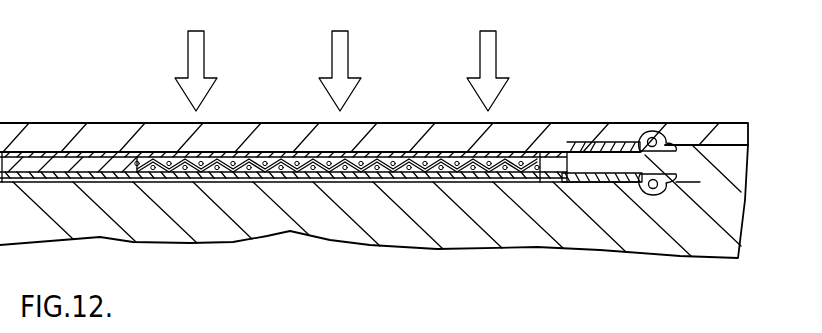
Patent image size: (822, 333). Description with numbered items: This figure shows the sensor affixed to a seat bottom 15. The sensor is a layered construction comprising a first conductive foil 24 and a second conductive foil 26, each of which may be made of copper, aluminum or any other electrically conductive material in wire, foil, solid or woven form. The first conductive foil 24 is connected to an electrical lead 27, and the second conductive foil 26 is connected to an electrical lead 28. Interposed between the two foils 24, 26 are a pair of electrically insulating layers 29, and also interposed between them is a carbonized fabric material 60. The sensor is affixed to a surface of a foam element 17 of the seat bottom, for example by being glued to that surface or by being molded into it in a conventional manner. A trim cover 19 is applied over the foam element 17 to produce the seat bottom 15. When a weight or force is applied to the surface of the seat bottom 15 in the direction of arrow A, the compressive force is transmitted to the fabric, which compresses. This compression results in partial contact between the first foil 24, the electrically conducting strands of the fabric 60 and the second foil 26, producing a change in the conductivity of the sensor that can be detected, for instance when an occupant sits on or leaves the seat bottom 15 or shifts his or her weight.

The seat bottom 15 is at (765, 140).
The foam element 17 is at (728, 213).
The trim cover 19 is at (725, 130).
The first conductive foil 24 is at (62, 152).
The second conductive foil 26 is at (167, 176).
The electrical lead 27 is at (653, 130).
The electrical lead 28 is at (652, 196).
The electrically insulating layers 29 is at (110, 165).
The carbonized fabric material 60 is at (384, 172).
The arrow A is at (202, 52).